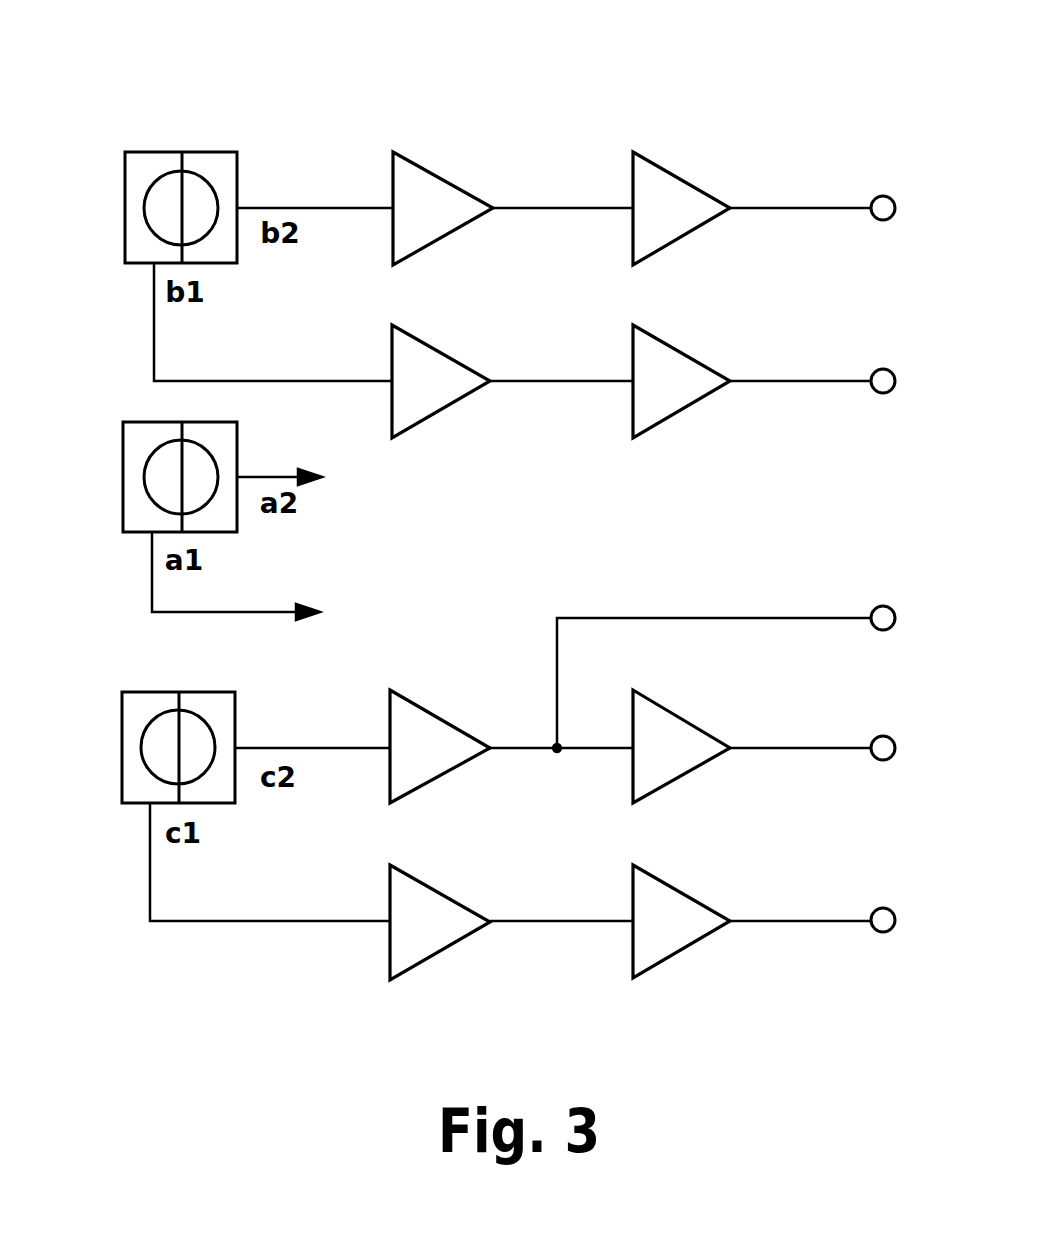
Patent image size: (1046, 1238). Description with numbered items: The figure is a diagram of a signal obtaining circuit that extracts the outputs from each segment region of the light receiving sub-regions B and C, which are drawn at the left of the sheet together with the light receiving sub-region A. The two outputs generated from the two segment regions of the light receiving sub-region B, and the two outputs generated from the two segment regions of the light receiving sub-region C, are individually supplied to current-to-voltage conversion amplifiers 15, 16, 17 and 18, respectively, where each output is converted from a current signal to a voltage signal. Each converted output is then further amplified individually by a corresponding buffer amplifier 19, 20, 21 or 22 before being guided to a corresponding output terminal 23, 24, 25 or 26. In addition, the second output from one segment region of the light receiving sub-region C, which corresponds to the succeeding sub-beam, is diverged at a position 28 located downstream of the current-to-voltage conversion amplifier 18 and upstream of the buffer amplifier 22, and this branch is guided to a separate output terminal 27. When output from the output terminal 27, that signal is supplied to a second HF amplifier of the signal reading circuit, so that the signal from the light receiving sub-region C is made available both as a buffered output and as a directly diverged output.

The current-to-voltage conversion amplifier 15 is at (438, 349).
The current-to-voltage conversion amplifier 16 is at (438, 176).
The current-to-voltage conversion amplifier 17 is at (430, 888).
The current-to-voltage conversion amplifier 18 is at (428, 712).
The buffer amplifier 19 is at (683, 352).
The buffer amplifier 20 is at (678, 176).
The buffer amplifier 21 is at (678, 891).
The buffer amplifier 22 is at (678, 717).
The output terminal 23 is at (890, 370).
The output terminal 24 is at (888, 197).
The output terminal 25 is at (888, 909).
The output terminal 26 is at (888, 737).
The output terminal 27 is at (888, 607).
The position 28 is at (552, 770).
The light receiving sub-region A is at (123, 477).
The light receiving sub-region B is at (125, 195).
The light receiving sub-region C is at (122, 737).